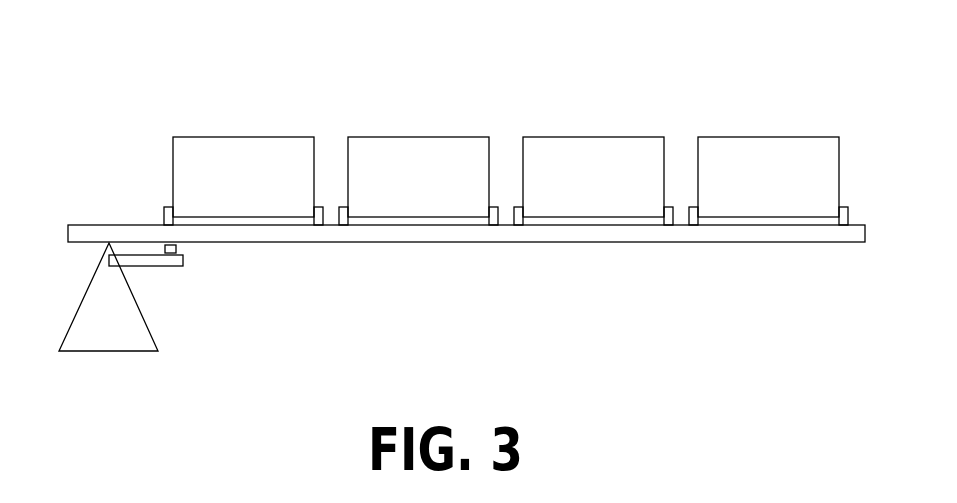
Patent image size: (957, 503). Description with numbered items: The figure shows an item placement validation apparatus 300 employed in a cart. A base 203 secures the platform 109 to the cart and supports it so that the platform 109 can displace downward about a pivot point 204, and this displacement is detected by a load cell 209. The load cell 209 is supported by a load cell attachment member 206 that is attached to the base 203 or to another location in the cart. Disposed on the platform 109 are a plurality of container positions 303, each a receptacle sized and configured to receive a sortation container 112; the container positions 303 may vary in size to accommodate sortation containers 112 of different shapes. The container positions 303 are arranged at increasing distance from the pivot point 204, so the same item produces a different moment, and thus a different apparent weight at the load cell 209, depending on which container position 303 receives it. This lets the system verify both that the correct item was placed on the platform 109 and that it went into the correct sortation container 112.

The item placement validation apparatus 300 is at (130, 86).
The platform 109 is at (820, 233).
The sortation container 112 is at (235, 153).
The container position 303 is at (165, 220).
The base 203 is at (104, 329).
The load cell attachment member 206 is at (165, 260).
The load cell 209 is at (173, 250).
The pivot point 204 is at (84, 258).